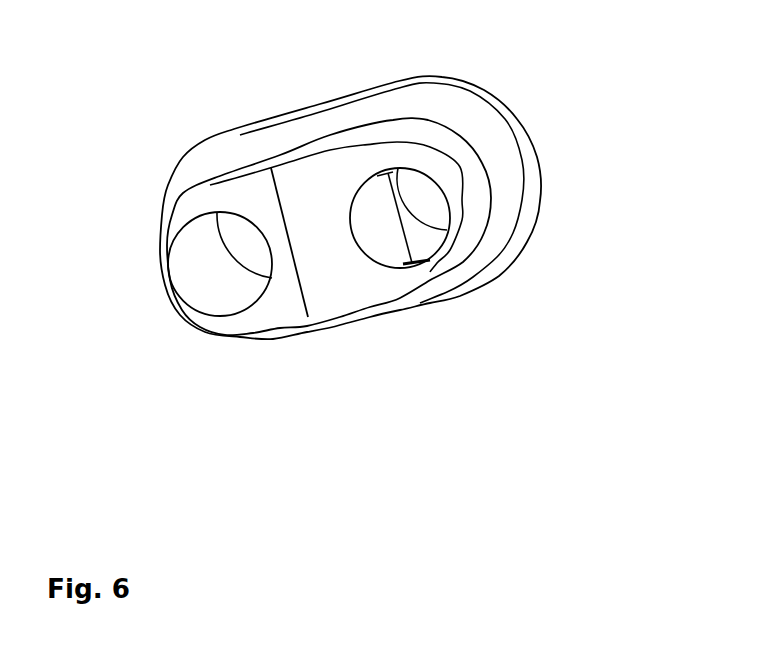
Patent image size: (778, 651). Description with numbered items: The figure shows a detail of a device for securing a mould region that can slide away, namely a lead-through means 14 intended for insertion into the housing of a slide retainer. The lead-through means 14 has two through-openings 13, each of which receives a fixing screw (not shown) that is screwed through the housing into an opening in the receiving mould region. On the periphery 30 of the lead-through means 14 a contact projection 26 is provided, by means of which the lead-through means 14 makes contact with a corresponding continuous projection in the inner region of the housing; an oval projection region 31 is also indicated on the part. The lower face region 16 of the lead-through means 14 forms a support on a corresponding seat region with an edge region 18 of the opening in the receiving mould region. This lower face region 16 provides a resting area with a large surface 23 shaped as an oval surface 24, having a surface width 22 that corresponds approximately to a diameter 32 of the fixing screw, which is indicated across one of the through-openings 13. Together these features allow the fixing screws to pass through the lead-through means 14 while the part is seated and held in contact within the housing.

The through-opening 13 is at (190, 230).
The lead-through means 14 is at (378, 320).
The lower face region 16 is at (331, 186).
The edge region 18 is at (358, 253).
The surface width 22 is at (295, 278).
The surface 23 is at (370, 283).
The oval surface 24 is at (306, 198).
The contact projection 26 is at (473, 272).
The periphery 30 is at (299, 104).
The oval projection region 31 is at (503, 168).
The diameter 32 is at (395, 218).